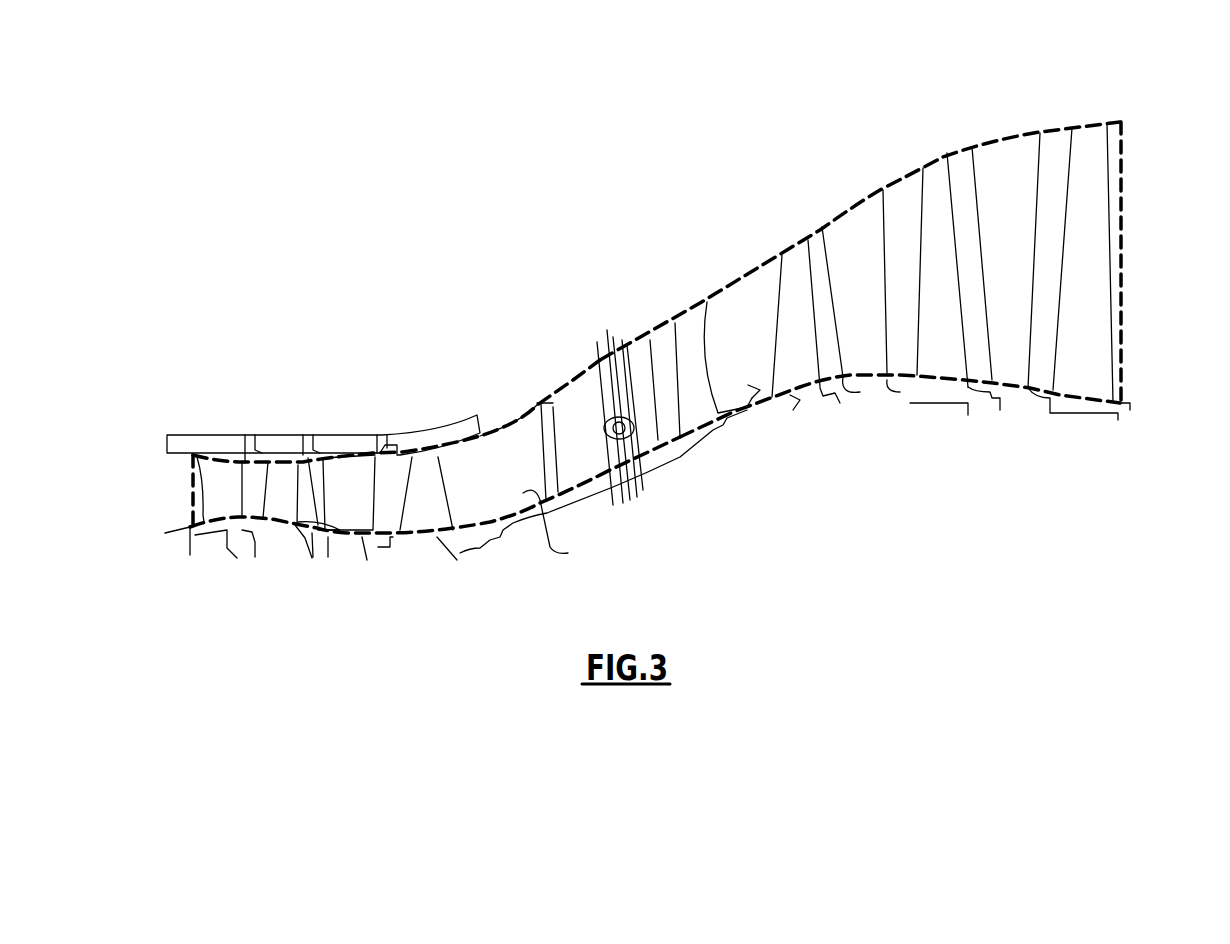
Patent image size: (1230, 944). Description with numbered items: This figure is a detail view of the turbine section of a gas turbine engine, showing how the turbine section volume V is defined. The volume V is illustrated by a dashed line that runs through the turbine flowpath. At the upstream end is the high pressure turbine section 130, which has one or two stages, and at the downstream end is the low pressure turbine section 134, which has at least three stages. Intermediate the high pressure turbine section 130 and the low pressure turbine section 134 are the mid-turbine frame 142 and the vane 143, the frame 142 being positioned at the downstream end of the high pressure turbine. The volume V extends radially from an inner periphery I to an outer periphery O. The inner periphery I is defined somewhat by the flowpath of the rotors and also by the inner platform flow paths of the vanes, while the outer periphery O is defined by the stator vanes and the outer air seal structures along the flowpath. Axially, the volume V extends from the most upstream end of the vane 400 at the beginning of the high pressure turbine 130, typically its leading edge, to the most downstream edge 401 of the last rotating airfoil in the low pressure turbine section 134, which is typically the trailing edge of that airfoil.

The high pressure turbine section 130 is at (351, 578).
The low pressure turbine section 134 is at (937, 125).
The mid-turbine frame 142 is at (610, 392).
The vane 143 is at (663, 363).
The vane 400 is at (193, 490).
The most downstream edge 401 is at (1110, 188).
The outer periphery O is at (503, 437).
The inner periphery I is at (550, 530).
The volume V is at (570, 443).